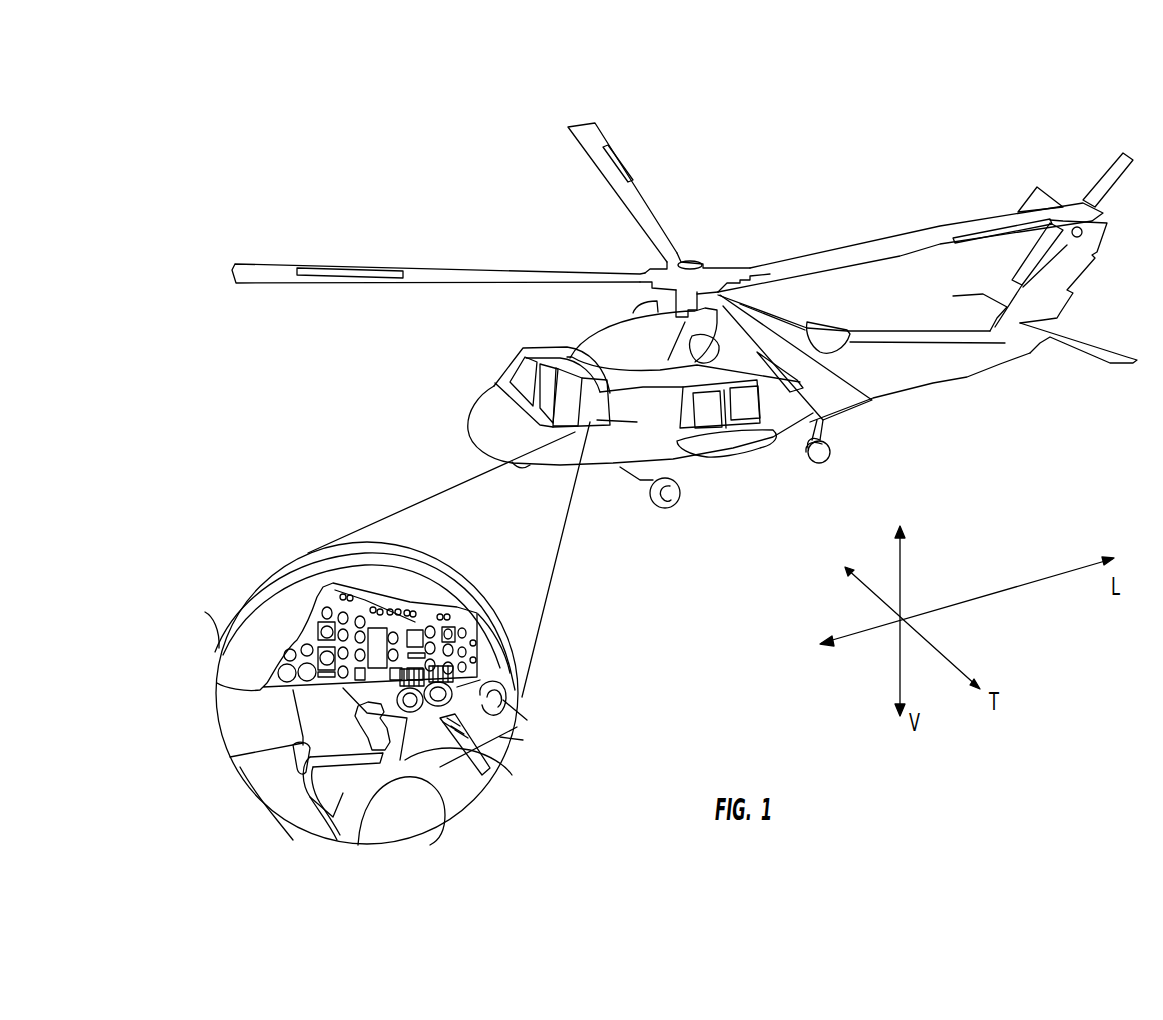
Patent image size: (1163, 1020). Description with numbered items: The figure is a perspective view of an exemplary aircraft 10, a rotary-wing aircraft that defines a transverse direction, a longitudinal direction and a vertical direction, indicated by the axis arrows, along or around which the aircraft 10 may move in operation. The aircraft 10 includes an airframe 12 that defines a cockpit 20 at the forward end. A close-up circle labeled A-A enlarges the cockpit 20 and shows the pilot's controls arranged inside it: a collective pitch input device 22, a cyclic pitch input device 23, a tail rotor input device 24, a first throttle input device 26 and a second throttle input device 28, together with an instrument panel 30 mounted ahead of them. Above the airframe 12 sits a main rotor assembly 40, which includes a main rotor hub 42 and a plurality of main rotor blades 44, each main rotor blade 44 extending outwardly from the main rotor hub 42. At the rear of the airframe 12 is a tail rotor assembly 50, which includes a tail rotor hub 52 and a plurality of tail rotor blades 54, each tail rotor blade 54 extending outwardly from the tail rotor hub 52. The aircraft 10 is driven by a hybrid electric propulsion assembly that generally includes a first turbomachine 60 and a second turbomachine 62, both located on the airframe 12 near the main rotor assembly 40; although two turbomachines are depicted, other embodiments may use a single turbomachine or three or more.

The aircraft 10 is at (452, 122).
The airframe 12 is at (493, 446).
The cockpit 20 is at (314, 542).
The collective pitch input device 22 is at (482, 767).
The cyclic pitch input device 23 is at (363, 722).
The tail rotor input device 24 is at (303, 760).
The first throttle input device 26 is at (442, 730).
The second throttle input device 28 is at (452, 688).
The instrument panel 30 is at (373, 618).
The main rotor assembly 40 is at (740, 240).
The main rotor hub 42 is at (692, 260).
The main rotor blades 44 is at (275, 268).
The tail rotor assembly 50 is at (1080, 175).
The tail rotor hub 52 is at (1082, 240).
The tail rotor blades 54 is at (1127, 163).
The first turbomachine 60 is at (808, 332).
The second turbomachine 62 is at (660, 306).